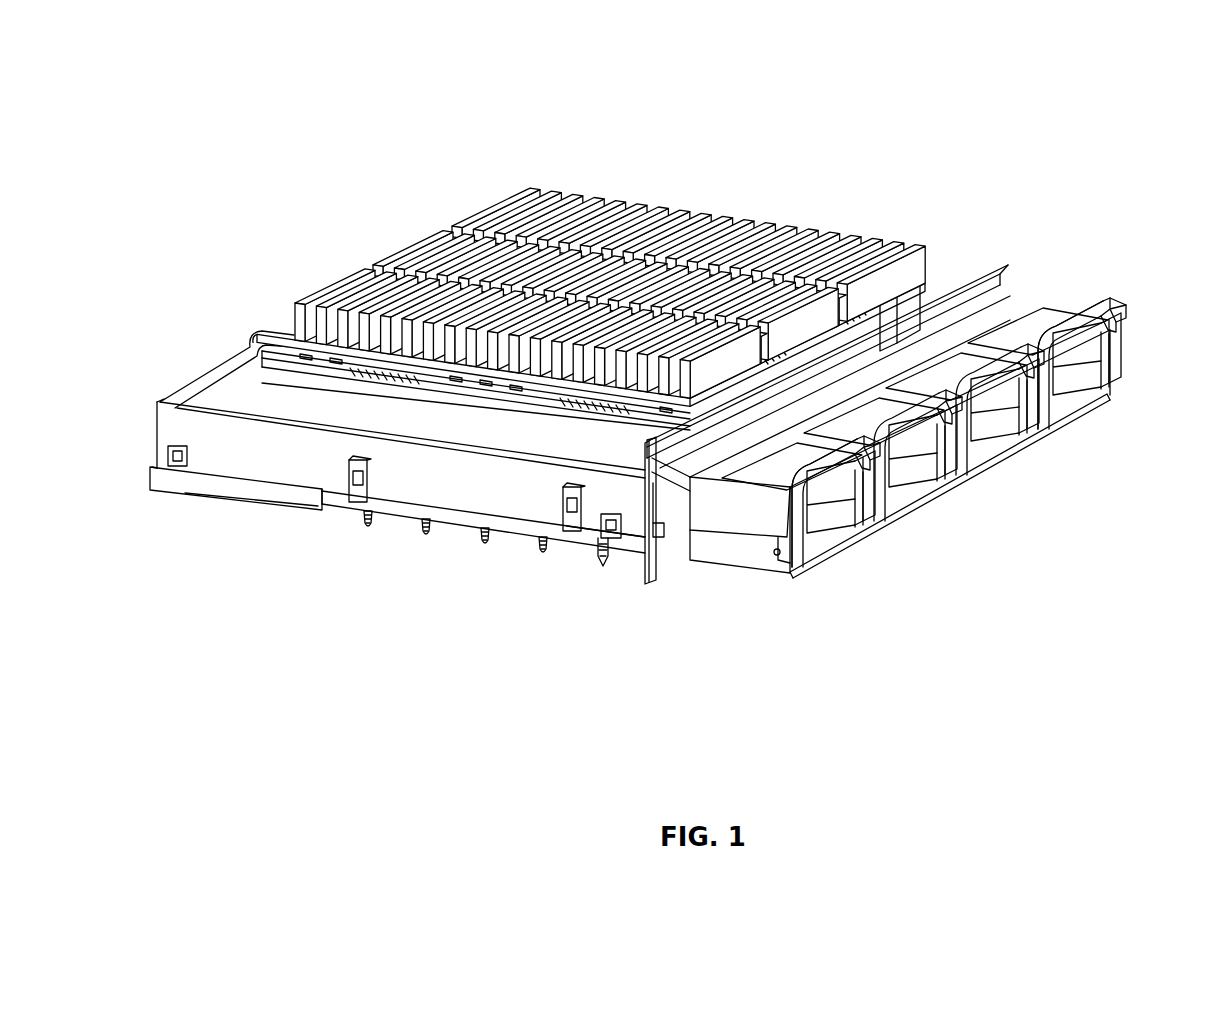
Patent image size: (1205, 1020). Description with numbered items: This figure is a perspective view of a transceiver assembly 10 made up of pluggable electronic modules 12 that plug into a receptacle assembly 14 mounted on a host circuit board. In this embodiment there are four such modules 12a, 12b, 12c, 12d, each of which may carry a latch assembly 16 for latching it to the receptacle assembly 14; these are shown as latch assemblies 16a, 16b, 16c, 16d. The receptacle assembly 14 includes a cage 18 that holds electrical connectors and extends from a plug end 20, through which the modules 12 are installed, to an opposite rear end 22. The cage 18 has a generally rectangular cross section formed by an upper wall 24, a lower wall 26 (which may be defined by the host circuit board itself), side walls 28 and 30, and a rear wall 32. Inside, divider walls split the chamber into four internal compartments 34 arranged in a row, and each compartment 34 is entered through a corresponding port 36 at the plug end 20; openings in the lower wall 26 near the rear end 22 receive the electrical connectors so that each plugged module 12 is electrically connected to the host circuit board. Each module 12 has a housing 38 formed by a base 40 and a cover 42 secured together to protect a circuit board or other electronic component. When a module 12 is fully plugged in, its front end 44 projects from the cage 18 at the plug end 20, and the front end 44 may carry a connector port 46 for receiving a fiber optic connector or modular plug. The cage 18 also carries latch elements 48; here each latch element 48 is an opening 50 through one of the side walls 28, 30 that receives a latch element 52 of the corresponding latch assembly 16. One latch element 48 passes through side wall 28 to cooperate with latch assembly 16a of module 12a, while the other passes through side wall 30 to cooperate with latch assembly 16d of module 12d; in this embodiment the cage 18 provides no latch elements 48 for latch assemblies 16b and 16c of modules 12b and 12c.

The transceiver assembly 10 is at (968, 107).
The pluggable electronic module 12 is at (900, 473).
The pluggable electronic module 12a is at (773, 573).
The pluggable electronic module 12b is at (924, 510).
The pluggable electronic module 12c is at (1000, 473).
The pluggable electronic module 12d is at (1080, 428).
The receptacle assembly 14 is at (690, 205).
The latch assembly 16 is at (900, 473).
The latch assembly 16a is at (813, 517).
The latch assembly 16b is at (957, 483).
The latch assembly 16c is at (1040, 400).
The latch assembly 16d is at (1117, 298).
The cage 18 is at (176, 420).
The plug end 20 is at (630, 556).
The rear end 22 is at (152, 487).
The upper wall 24 is at (215, 380).
The lower wall 26 is at (570, 547).
The side wall 28 is at (410, 490).
The side wall 30 is at (925, 272).
The rear wall 32 is at (162, 413).
The internal compartment 34 is at (370, 392).
The port 36 is at (1000, 312).
The housing 38 is at (807, 578).
The base 40 is at (717, 547).
The cover 42 is at (735, 513).
The front end 44 is at (1063, 312).
The connector port 46 is at (1080, 383).
The latch element 48 is at (595, 545).
The opening 50 is at (655, 582).
The latch element 52 is at (607, 538).